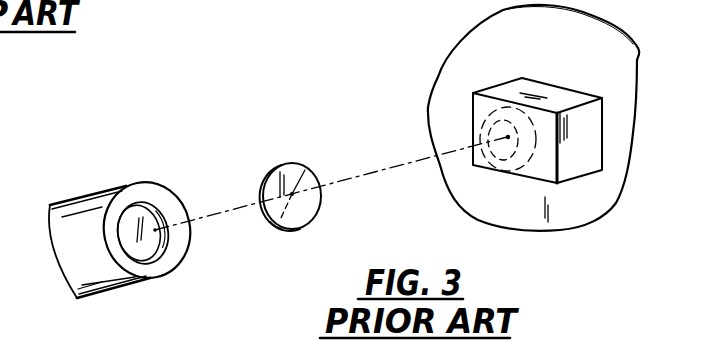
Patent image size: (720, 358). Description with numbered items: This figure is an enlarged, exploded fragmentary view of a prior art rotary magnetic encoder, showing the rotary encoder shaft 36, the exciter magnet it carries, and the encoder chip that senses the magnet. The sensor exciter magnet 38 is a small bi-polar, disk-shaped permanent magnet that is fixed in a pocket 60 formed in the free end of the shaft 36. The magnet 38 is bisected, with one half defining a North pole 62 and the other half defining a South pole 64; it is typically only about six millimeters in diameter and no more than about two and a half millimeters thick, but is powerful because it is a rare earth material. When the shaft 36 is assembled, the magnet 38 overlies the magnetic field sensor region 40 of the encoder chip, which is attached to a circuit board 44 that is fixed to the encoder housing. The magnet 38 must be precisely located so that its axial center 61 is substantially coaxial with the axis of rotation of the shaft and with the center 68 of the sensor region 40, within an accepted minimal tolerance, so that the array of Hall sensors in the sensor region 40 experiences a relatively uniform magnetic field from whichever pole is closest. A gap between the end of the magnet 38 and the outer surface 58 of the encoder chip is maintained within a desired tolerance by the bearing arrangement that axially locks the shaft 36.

The rotary encoder shaft 36 is at (68, 217).
The pocket 60 is at (140, 210).
The sensor exciter magnet 38 is at (258, 230).
The North pole 62 is at (282, 165).
The South pole 64 is at (305, 220).
The axial center 61 is at (292, 194).
The circuit board 44 is at (544, 37).
The center of the sensor region 68 is at (510, 137).
The magnetic field sensor region 40 is at (507, 137).
The outer surface of the encoder chip 58 is at (492, 162).